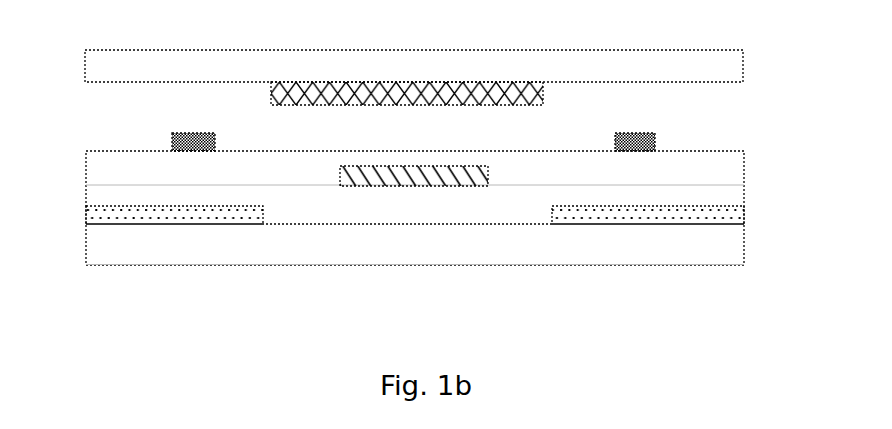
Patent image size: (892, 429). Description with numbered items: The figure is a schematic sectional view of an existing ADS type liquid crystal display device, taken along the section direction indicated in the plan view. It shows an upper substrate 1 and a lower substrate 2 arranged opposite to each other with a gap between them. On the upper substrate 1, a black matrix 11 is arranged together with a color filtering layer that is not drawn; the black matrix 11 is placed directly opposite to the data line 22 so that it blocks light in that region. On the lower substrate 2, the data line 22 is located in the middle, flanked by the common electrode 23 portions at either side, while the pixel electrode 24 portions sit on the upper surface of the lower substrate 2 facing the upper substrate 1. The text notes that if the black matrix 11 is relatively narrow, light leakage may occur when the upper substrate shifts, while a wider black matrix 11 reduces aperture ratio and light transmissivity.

The upper substrate 1 is at (197, 60).
The black matrix 11 is at (455, 95).
The lower substrate 2 is at (525, 250).
The data line 22 is at (415, 186).
The common electrode 23 is at (180, 222).
The pixel electrode 24 is at (182, 133).